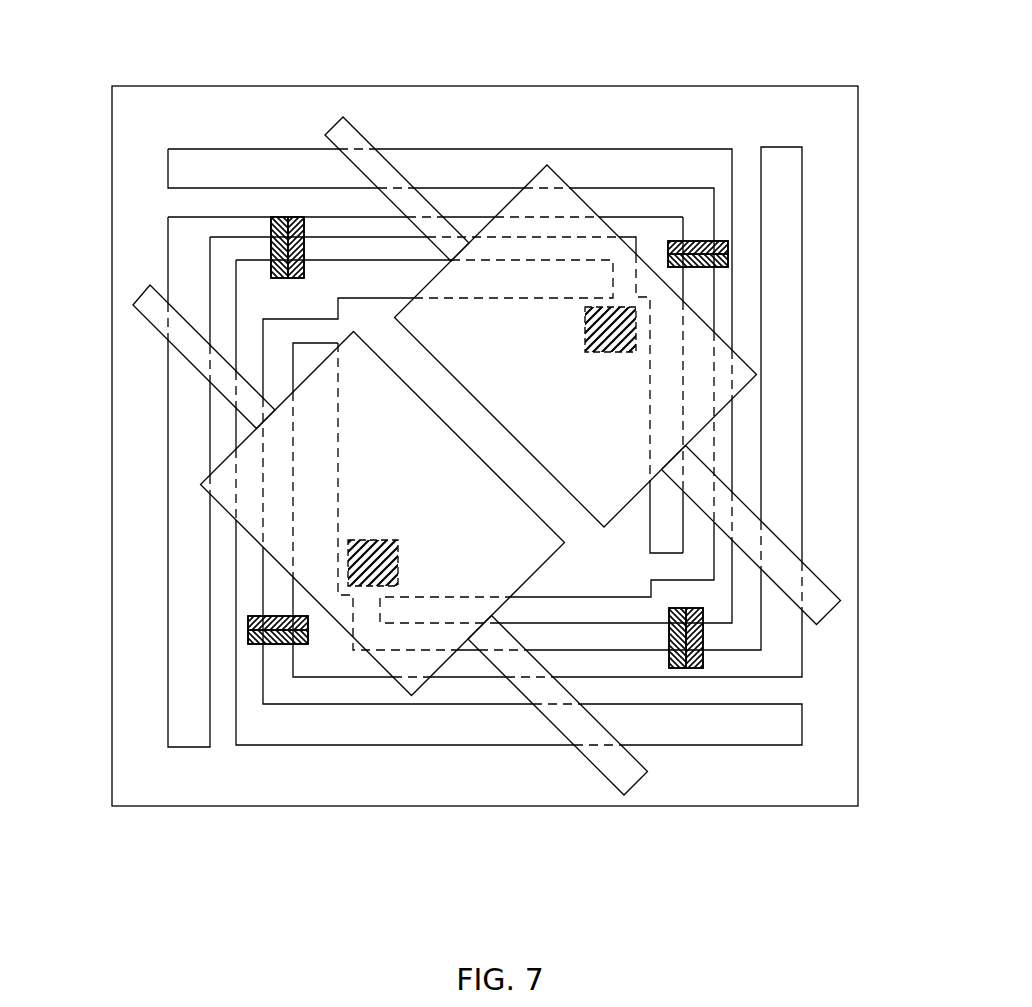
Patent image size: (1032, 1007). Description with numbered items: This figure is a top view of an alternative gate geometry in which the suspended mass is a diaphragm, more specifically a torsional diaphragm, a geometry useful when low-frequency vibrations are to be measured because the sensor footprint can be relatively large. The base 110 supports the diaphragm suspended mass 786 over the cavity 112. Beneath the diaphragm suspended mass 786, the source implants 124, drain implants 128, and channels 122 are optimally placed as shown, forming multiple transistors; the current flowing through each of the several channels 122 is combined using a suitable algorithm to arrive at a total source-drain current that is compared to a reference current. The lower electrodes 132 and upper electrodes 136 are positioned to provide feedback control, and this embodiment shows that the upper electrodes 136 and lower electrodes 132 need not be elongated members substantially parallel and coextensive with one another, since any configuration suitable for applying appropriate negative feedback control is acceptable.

The base 110 is at (162, 790).
The cavity 112 is at (615, 165).
The channels 122 is at (288, 217).
The source implants 124 is at (298, 217).
The drain implants 128 is at (277, 217).
The lower electrodes 132 is at (636, 330).
The upper electrodes 136 is at (157, 312).
The diaphragm suspended mass 786 is at (338, 308).